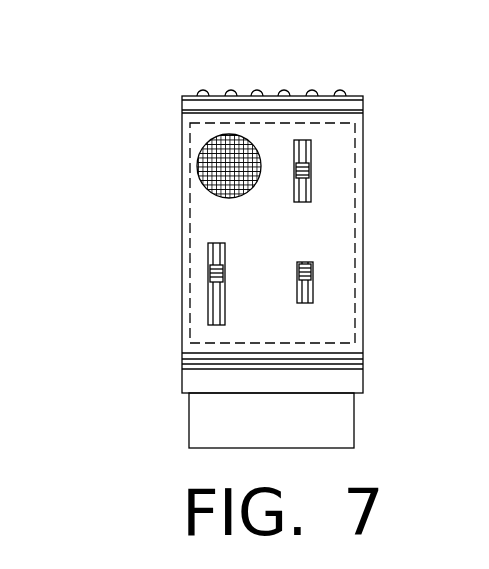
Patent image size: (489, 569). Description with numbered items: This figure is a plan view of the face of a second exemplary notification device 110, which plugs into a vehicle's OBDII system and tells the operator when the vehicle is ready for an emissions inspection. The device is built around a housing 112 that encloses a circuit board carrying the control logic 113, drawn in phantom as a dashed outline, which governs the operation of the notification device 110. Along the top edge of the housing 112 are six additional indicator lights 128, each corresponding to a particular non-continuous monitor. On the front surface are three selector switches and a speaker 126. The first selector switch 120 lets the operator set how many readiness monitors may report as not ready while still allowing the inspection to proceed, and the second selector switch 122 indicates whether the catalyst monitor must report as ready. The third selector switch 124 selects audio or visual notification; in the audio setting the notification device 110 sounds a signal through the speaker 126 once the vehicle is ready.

The notification device 110 is at (122, 86).
The housing 112 is at (187, 397).
The control logic 113 is at (365, 330).
The first selector switch 120 is at (207, 270).
The second selector switch 122 is at (314, 285).
The third selector switch 124 is at (345, 170).
The speaker 126 is at (199, 156).
The additional indicator lights 128 is at (247, 79).